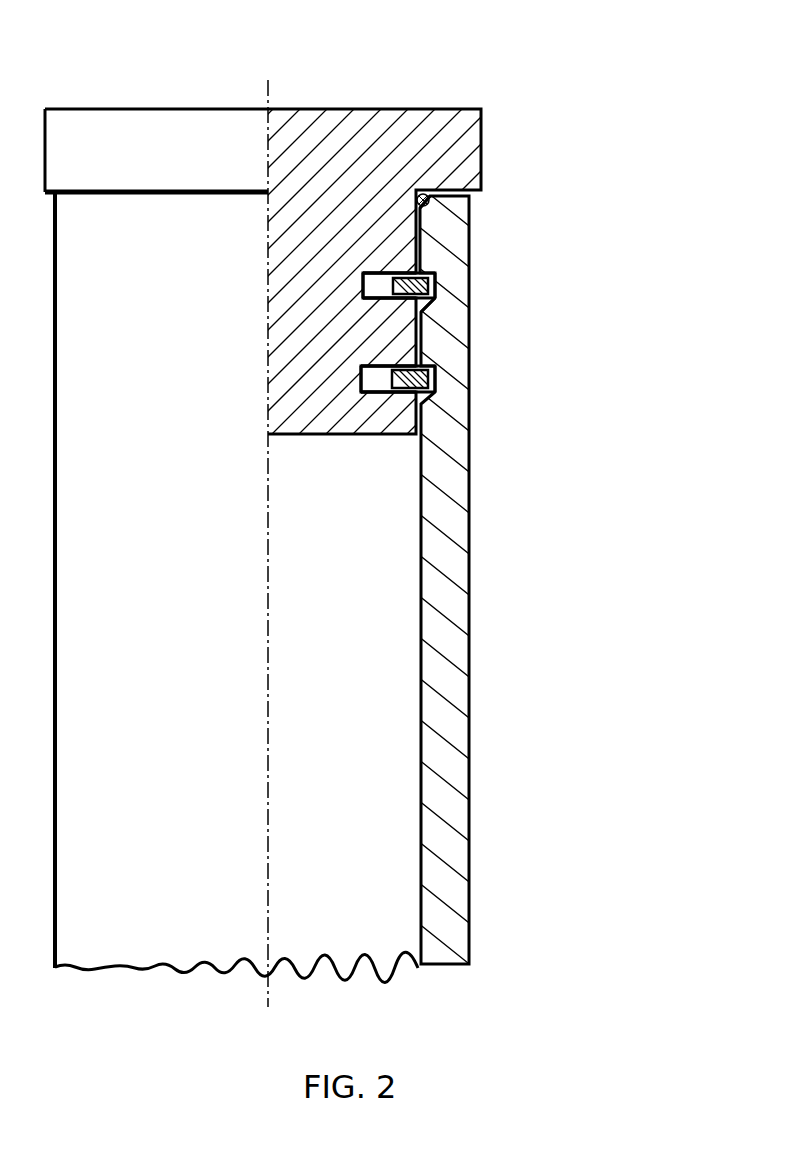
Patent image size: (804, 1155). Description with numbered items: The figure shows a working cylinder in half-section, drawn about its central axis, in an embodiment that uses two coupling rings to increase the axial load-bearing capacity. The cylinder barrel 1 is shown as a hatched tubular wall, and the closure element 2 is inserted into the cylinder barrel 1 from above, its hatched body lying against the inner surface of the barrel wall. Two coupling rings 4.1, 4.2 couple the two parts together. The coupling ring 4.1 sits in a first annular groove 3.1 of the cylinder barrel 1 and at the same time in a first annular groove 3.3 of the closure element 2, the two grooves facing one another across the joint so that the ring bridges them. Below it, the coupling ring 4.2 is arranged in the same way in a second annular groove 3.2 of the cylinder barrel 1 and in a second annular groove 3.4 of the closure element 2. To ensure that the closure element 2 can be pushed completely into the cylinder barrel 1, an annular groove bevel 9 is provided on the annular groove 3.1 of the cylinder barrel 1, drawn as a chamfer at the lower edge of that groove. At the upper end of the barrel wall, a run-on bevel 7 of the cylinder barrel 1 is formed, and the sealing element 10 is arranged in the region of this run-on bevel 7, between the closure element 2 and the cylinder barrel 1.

The cylinder barrel 1 is at (450, 803).
The closure element 2 is at (458, 138).
The first annular groove of the cylinder barrel 3.1 is at (436, 275).
The second annular groove of the cylinder barrel 3.2 is at (436, 367).
The first annular groove of the closure element 3.3 is at (371, 285).
The second annular groove of the closure element 3.4 is at (371, 383).
The coupling ring 4.1 is at (436, 290).
The coupling ring 4.2 is at (445, 401).
The run-on bevel 7 is at (437, 205).
The annular groove bevel 9 is at (423, 310).
The sealing element 10 is at (423, 194).